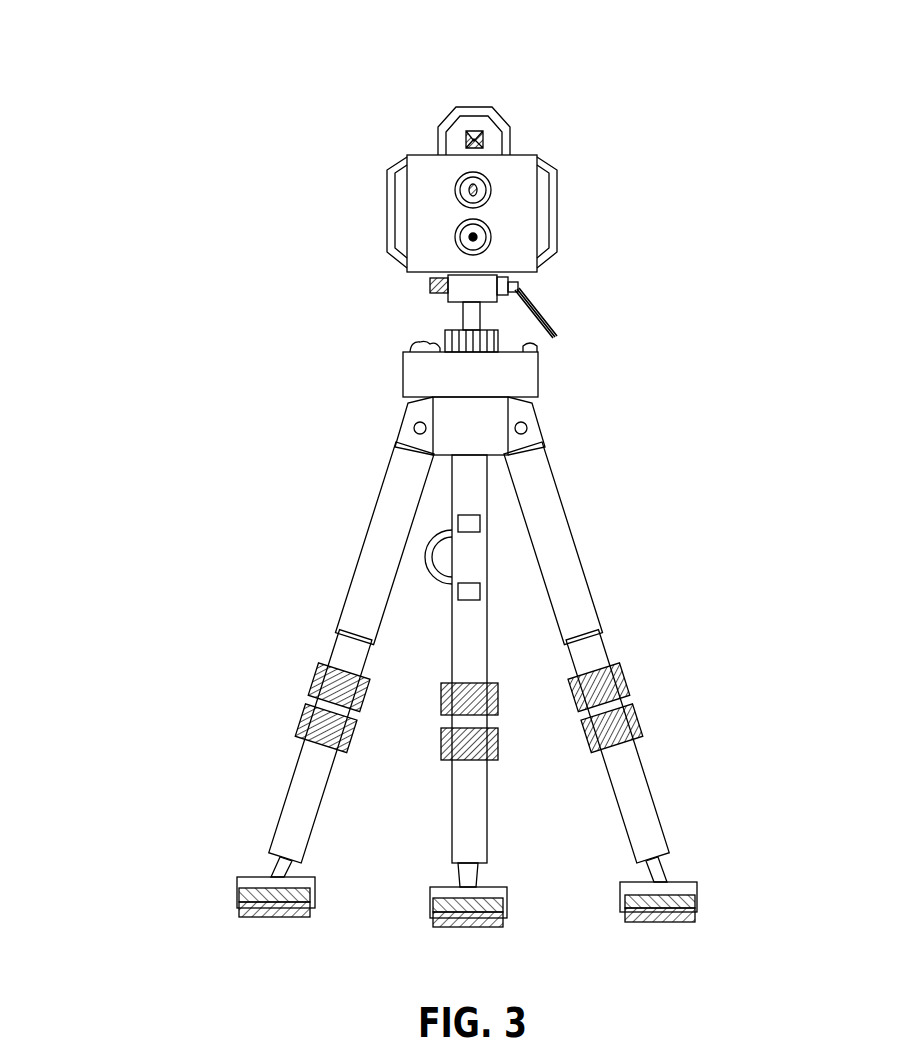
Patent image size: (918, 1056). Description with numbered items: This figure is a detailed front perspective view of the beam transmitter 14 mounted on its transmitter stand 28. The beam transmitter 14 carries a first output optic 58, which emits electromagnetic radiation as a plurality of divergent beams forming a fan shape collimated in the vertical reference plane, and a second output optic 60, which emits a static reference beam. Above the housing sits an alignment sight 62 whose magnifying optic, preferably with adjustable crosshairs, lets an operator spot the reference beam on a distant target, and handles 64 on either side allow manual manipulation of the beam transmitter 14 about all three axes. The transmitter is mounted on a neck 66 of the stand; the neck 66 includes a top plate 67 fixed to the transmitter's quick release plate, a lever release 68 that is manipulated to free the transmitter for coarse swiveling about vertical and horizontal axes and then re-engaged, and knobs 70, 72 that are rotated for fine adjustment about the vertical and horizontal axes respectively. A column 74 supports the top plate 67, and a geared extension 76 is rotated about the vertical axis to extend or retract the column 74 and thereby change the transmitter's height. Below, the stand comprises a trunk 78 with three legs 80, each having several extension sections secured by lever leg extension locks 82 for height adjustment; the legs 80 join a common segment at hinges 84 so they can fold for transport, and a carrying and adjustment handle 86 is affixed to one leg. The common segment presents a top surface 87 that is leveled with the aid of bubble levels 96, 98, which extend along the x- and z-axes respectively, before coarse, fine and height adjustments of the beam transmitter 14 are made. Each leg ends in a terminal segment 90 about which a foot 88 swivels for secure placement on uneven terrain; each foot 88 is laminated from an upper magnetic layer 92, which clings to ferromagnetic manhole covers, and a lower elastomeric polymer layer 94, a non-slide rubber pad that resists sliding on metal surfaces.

The beam transmitter 14 is at (477, 141).
The transmitter stand 28 is at (422, 655).
The first output optic 58 is at (488, 183).
The second output optic 60 is at (462, 237).
The alignment sight 62 is at (501, 110).
The handles 64 is at (386, 183).
The neck 66 is at (484, 284).
The top plate 67 is at (509, 283).
The lever release 68 is at (560, 330).
The knob 70 is at (519, 289).
The knob 72 is at (430, 285).
The column 74 is at (471, 320).
The geared extension 76 is at (445, 338).
The trunk 78 is at (467, 681).
The legs 80 is at (357, 625).
The lever leg extension locks 82 is at (310, 675).
The hinges 84 is at (527, 432).
The carrying and adjustment handle 86 is at (425, 552).
The top surface 87 is at (540, 364).
The feet 88 is at (467, 933).
The terminal segments 90 is at (279, 875).
The magnetic layer 92 is at (250, 893).
The elastomeric polymer layer 94 is at (240, 905).
The bubble level 96 is at (409, 347).
The bubble level 98 is at (534, 350).